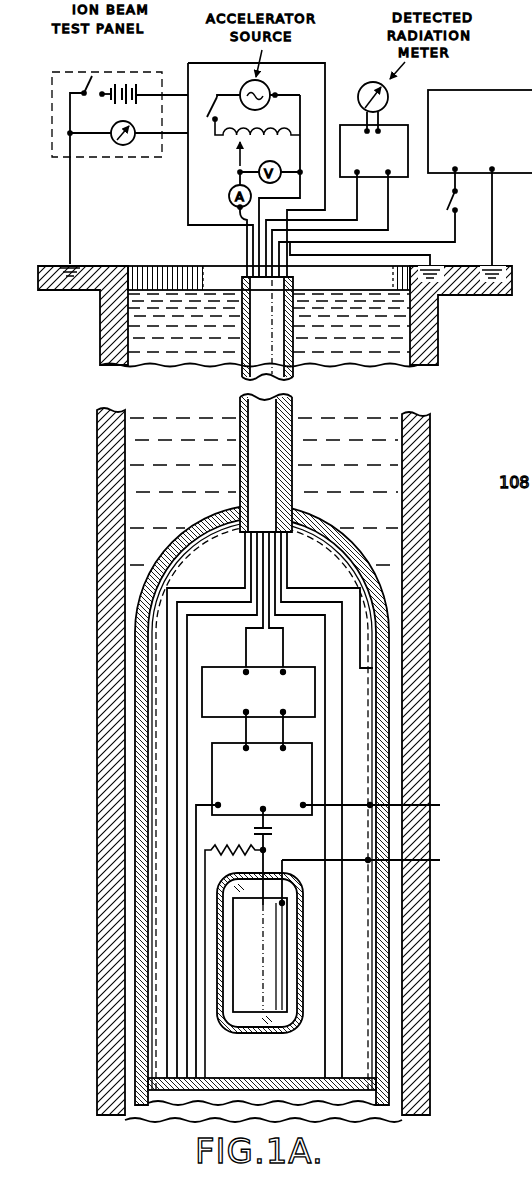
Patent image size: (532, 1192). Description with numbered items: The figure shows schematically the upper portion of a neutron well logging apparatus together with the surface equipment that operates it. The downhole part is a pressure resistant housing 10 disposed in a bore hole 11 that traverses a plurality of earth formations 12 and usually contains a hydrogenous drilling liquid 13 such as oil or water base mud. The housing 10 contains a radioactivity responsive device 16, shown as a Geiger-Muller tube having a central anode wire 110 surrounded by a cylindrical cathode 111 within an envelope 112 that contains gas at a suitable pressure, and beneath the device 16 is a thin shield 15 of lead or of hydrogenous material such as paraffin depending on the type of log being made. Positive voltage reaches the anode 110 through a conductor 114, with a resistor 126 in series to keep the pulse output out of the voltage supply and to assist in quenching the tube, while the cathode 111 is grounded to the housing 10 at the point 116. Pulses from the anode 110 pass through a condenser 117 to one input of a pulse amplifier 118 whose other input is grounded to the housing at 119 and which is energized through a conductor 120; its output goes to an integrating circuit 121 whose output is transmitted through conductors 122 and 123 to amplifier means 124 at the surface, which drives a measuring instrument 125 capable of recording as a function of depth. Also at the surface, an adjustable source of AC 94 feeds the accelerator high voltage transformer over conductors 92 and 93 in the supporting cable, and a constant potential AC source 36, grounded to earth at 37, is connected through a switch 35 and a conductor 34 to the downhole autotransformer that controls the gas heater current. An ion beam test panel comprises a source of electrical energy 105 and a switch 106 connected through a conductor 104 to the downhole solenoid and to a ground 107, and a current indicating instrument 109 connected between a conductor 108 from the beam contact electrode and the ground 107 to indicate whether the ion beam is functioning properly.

The pressure resistant housing 10 is at (347, 529).
The bore hole 11 is at (403, 445).
The earth formations 12 is at (429, 557).
The hydrogenous drilling liquid 13 is at (403, 328).
The thin shield 15 is at (346, 1093).
The radioactivity responsive device 16 is at (292, 1034).
The conductor 34 is at (458, 230).
The switch 35 is at (452, 200).
The constant potential AC source 36 is at (495, 90).
The ground 37 is at (496, 268).
The conductor 92 is at (236, 225).
The conductor 93 is at (300, 198).
The adjustable source of AC 94 is at (292, 82).
The conductor 104 is at (203, 63).
The source of electrical energy 105 is at (130, 84).
The switch 106 is at (90, 72).
The ground 107 is at (76, 262).
The conductor 108 is at (186, 213).
The current indicating instrument 109 is at (125, 145).
The central anode wire 110 is at (265, 978).
The cylindrical cathode 111 is at (288, 925).
The envelope 112 is at (300, 951).
The conductor 114 is at (207, 1055).
The ground point 116 is at (378, 881).
The condenser 117 is at (273, 831).
The pulse amplifier 118 is at (300, 749).
The ground point 119 is at (389, 809).
The conductor 120 is at (196, 825).
The integrating circuit 121 is at (219, 712).
The conductor 122 is at (360, 196).
The conductor 123 is at (390, 218).
The amplifier means 124 is at (397, 127).
The measuring instrument 125 is at (372, 82).
The resistor 126 is at (230, 852).